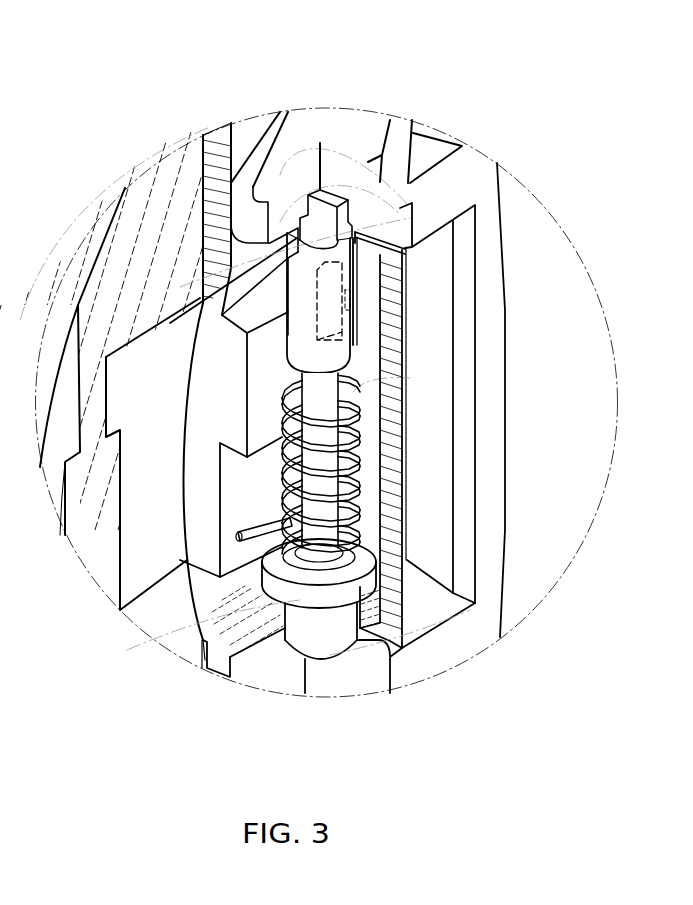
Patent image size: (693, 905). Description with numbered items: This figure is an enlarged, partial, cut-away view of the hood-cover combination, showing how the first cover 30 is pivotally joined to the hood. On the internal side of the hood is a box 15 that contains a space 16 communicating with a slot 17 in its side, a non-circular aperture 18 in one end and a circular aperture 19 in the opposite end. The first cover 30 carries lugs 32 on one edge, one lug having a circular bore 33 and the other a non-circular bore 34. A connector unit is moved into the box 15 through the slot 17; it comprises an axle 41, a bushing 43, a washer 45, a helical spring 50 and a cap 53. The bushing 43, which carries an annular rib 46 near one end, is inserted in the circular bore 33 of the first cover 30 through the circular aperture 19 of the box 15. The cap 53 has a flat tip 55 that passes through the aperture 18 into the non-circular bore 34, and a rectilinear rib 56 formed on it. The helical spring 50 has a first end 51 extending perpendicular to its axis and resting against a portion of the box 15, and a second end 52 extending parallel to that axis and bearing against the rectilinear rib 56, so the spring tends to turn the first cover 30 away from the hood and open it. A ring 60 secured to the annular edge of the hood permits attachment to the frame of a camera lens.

The box 15 is at (405, 290).
The space 16 is at (368, 402).
The slot 17 is at (213, 608).
The non-circular aperture 18 is at (203, 187).
The circular aperture 19 is at (235, 668).
The first cover 30 is at (492, 533).
The lug 32 is at (333, 125).
The circular bore 33 is at (318, 630).
The non-circular bore 34 is at (231, 122).
The axle 41 is at (407, 547).
The bushing 43 is at (280, 643).
The washer 45 is at (325, 572).
The annular rib 46 is at (362, 590).
The helical spring 50 is at (345, 470).
The first end 51 is at (236, 538).
The second end 52 is at (360, 355).
The cap 53 is at (208, 236).
The flat tip 55 is at (333, 208).
The rectilinear rib 56 is at (400, 227).
The ring 60 is at (138, 265).